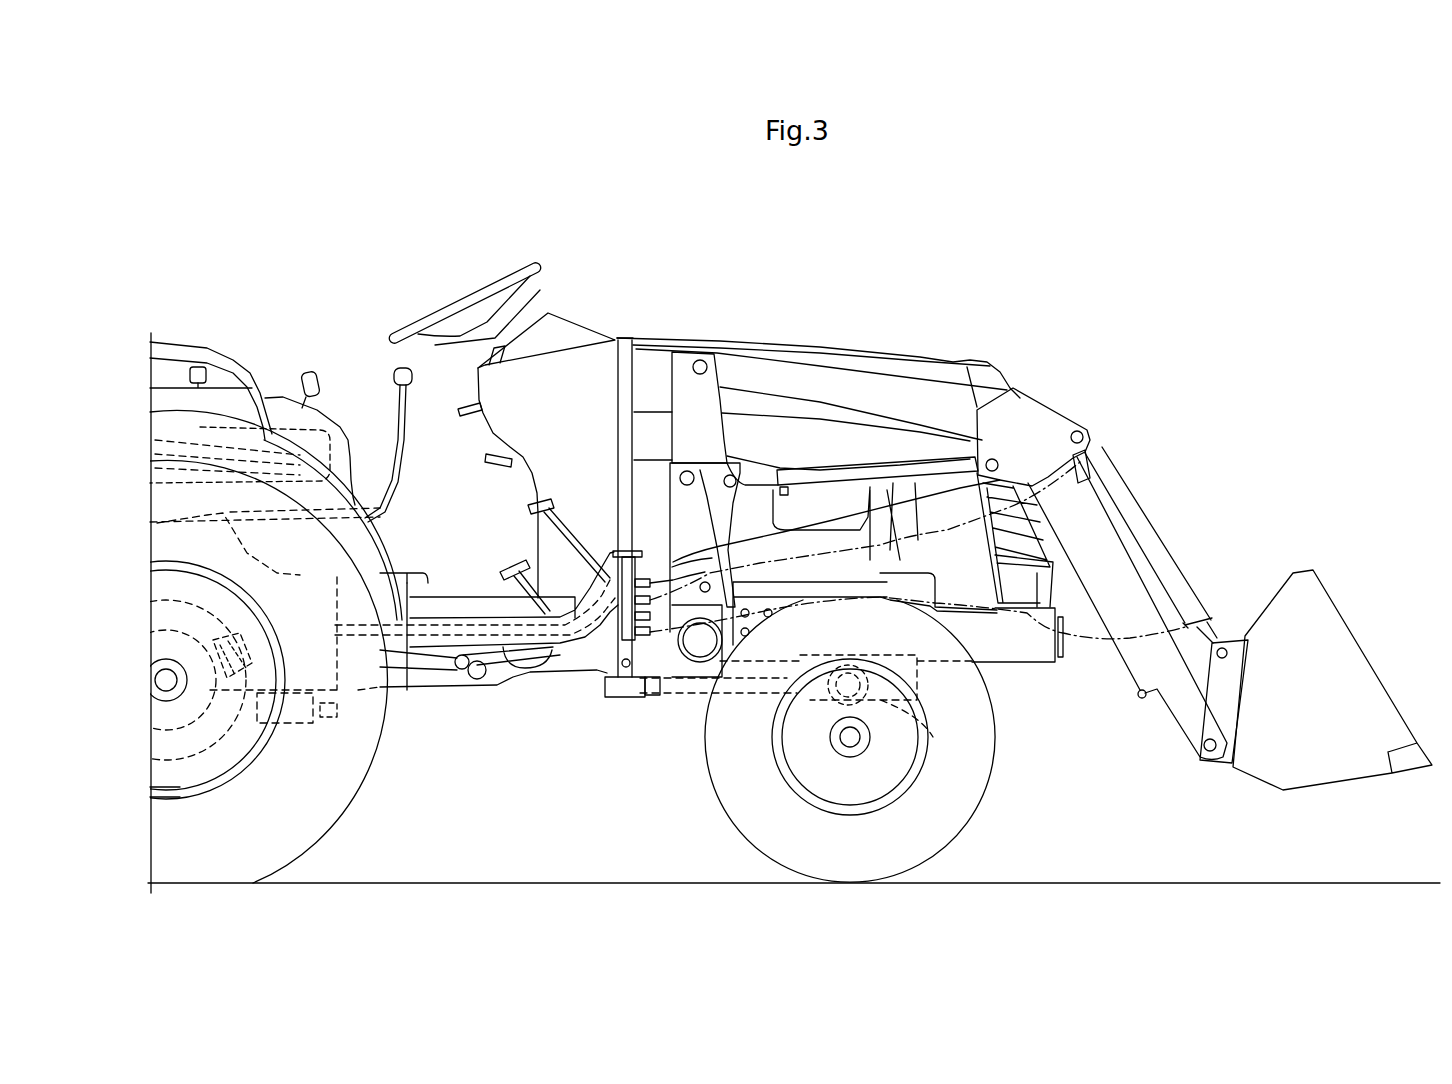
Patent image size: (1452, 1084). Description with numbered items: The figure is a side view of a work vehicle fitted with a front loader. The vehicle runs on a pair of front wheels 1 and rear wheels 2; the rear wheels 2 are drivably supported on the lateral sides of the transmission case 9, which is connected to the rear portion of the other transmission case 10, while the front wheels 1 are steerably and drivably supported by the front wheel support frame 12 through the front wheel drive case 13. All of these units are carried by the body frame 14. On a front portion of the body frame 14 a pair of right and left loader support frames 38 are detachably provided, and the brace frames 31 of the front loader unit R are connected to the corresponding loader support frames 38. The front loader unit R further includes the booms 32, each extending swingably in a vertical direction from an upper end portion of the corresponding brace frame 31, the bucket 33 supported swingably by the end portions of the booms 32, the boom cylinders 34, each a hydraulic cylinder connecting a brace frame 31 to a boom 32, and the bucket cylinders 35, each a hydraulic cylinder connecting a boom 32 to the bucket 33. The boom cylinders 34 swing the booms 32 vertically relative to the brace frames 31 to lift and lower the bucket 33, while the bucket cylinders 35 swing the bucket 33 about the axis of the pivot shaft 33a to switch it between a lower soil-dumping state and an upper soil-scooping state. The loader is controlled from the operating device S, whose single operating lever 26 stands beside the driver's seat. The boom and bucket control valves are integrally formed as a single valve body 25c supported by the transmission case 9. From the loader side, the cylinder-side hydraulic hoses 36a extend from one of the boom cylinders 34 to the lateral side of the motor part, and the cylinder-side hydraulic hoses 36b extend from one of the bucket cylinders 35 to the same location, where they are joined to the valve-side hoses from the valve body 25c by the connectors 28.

The front wheel 1 is at (977, 800).
The rear wheel 2 is at (347, 799).
The transmission case 9 is at (221, 732).
The transmission case 10 is at (498, 688).
The front wheel support frame 12 is at (1023, 662).
The front wheel drive case 13 is at (885, 702).
The body frame 14 is at (425, 693).
The valve body 25c is at (217, 672).
The operating lever 26 is at (402, 440).
The connector 28 is at (650, 575).
The brace frame 31 is at (687, 355).
The boom 32 is at (1125, 566).
The bucket 33 is at (1306, 778).
The pivot shaft 33a is at (1207, 752).
The boom cylinder 34 is at (887, 465).
The bucket cylinder 35 is at (1122, 487).
The cylinder-side hydraulic hose 36a is at (788, 573).
The cylinder-side hydraulic hose 36b is at (958, 535).
The loader support frame 38 is at (695, 672).
The operating device S is at (409, 358).
The front loader unit R is at (1326, 548).